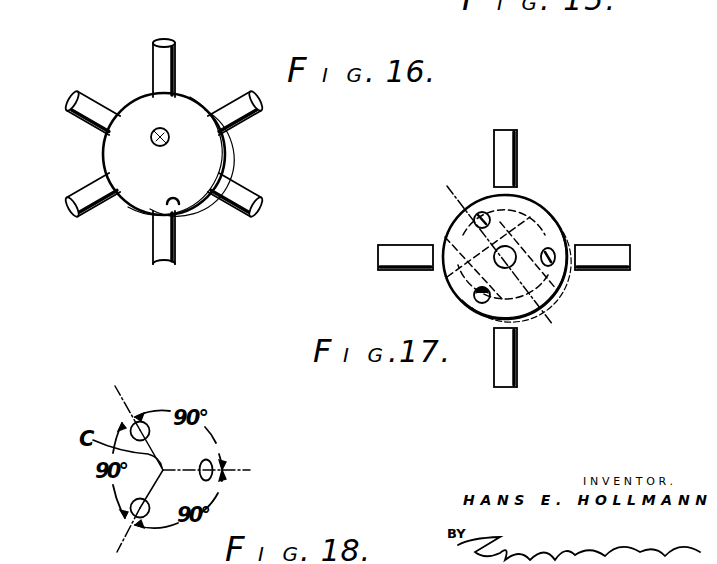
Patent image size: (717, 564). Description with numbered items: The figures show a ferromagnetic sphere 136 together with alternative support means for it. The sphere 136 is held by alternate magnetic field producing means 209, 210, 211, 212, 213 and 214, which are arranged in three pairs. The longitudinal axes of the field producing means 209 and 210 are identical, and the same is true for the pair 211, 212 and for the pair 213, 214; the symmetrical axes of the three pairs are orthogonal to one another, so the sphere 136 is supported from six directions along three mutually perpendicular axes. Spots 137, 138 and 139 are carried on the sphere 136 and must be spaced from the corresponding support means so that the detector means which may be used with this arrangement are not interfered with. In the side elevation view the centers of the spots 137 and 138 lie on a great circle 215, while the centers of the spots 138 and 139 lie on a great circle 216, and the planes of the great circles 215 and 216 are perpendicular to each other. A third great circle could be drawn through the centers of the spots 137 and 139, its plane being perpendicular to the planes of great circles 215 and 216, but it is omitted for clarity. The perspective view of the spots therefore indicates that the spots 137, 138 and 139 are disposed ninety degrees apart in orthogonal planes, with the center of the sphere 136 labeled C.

In FIG. 16, the sphere 136 is at (105, 150).
In FIG. 17, the sphere 136 is at (542, 206).
In FIG. 16, the spot 137 is at (169, 137).
In FIG. 17, the spot 137 is at (490, 216).
In FIG. 18, the spot 137 is at (152, 418).
In FIG. 17, the spot 138 is at (556, 250).
In FIG. 18, the spot 138 is at (209, 460).
In FIG. 16, the spot 139 is at (180, 206).
In FIG. 17, the spot 139 is at (475, 298).
In FIG. 18, the spot 139 is at (131, 509).
In FIG. 16, the magnetic field producing means 209 is at (152, 48).
In FIG. 17, the magnetic field producing means 209 is at (510, 133).
In FIG. 16, the magnetic field producing means 210 is at (176, 261).
In FIG. 17, the magnetic field producing means 210 is at (503, 368).
In FIG. 16, the magnetic field producing means 211 is at (88, 200).
In FIG. 17, the magnetic field producing means 211 is at (400, 244).
In FIG. 16, the magnetic field producing means 212 is at (244, 100).
In FIG. 17, the magnetic field producing means 212 is at (630, 247).
In FIG. 16, the magnetic field producing means 213 is at (247, 188).
In FIG. 17, the magnetic field producing means 213 is at (510, 262).
In FIG. 16, the magnetic field producing means 214 is at (90, 97).
In FIG. 17, the great circle 215 is at (467, 217).
In FIG. 17, the great circle 216 is at (525, 300).